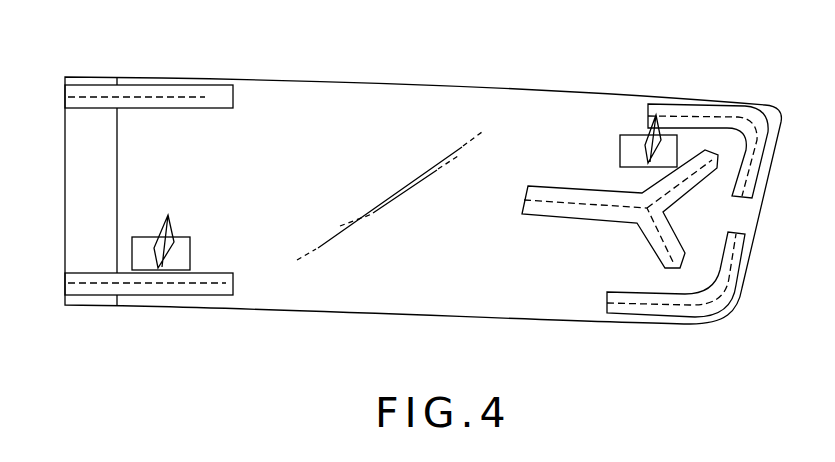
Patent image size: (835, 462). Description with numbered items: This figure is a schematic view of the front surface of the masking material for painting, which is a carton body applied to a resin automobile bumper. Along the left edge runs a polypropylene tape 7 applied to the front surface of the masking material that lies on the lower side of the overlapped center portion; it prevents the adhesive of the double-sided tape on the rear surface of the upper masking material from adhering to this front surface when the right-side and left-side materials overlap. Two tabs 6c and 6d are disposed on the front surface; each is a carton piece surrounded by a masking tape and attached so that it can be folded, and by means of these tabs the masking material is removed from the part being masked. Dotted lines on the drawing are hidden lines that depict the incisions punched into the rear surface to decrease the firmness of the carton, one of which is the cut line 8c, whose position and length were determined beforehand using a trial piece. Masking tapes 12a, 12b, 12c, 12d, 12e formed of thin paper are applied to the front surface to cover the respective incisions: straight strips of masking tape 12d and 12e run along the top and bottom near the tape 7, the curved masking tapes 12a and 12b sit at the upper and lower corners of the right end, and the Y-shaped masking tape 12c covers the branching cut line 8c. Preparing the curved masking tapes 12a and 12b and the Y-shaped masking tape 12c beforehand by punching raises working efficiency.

The polypropylene tape 7 is at (82, 185).
The masking tape 12d is at (213, 95).
The masking tape 12e is at (98, 292).
The tab 6c is at (168, 217).
The tab 6d is at (650, 131).
The curved masking tape 12a is at (740, 118).
The curved masking tape 12b is at (662, 310).
The Y-shaped masking tape 12c is at (700, 148).
The cut line 8c is at (548, 213).